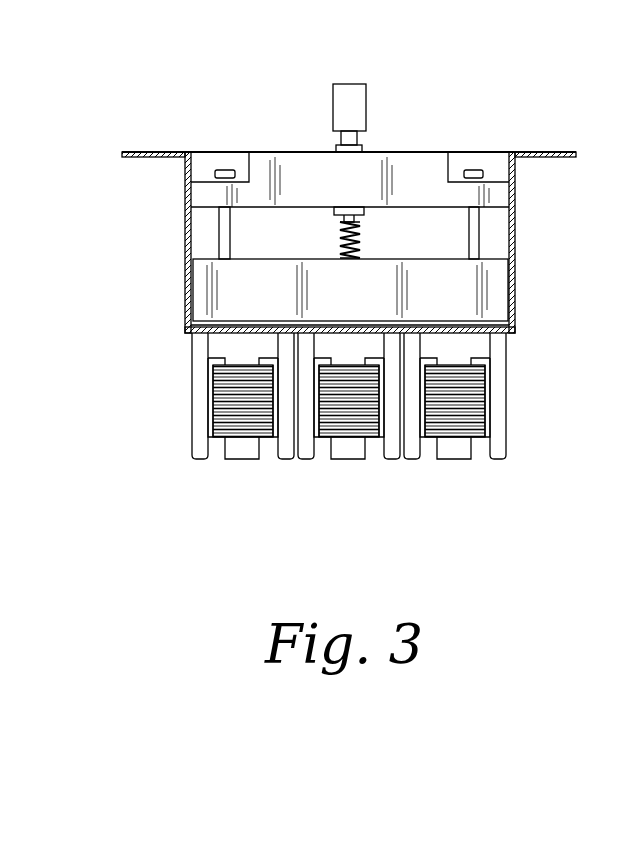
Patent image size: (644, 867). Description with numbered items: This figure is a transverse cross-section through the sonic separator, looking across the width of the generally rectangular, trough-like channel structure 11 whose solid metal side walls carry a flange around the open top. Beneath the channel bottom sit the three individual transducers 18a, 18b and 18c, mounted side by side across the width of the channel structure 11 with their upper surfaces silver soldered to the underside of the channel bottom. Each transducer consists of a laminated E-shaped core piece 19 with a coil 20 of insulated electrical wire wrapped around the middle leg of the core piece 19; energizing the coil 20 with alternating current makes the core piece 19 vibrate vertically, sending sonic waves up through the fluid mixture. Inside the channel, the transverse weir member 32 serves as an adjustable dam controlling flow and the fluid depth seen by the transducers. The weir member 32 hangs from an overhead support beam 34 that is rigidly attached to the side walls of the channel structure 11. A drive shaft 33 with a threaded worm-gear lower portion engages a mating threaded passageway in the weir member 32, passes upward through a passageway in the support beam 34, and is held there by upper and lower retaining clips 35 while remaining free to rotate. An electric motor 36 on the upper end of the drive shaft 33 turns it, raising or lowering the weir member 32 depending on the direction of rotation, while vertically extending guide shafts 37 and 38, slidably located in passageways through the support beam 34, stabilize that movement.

The channel structure 11 is at (186, 262).
The transducer 18a is at (247, 466).
The transducer 18b is at (352, 466).
The transducer 18c is at (457, 466).
The core piece 19 is at (192, 425).
The coil 20 is at (222, 391).
The weir member 32 is at (198, 300).
The drive shaft 33 is at (340, 245).
The support beam 34 is at (430, 167).
The retaining clips 35 is at (336, 150).
The electric motor 36 is at (366, 106).
The guide shaft 37 is at (221, 225).
The guide shaft 38 is at (479, 228).